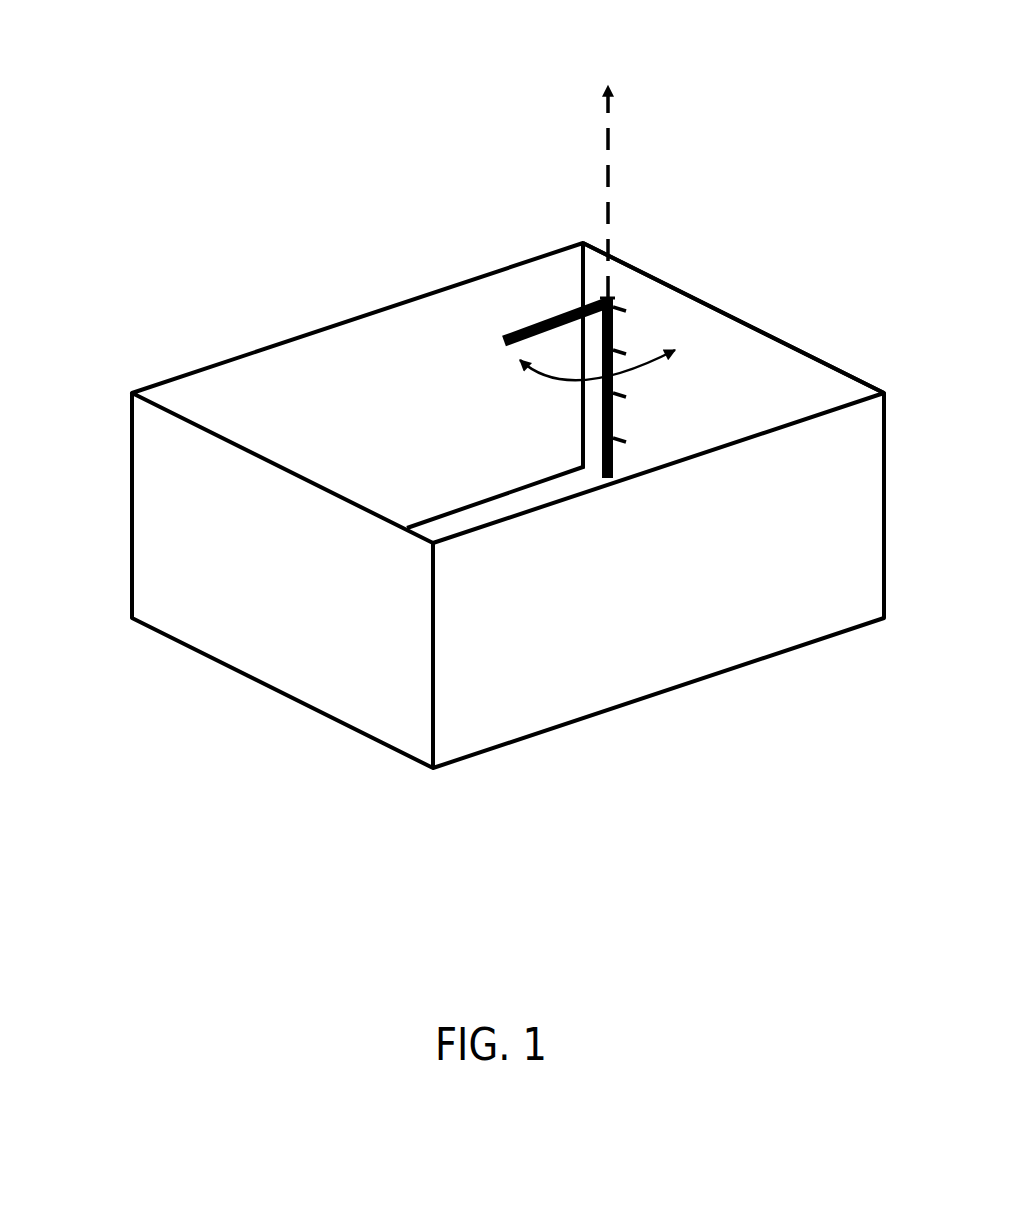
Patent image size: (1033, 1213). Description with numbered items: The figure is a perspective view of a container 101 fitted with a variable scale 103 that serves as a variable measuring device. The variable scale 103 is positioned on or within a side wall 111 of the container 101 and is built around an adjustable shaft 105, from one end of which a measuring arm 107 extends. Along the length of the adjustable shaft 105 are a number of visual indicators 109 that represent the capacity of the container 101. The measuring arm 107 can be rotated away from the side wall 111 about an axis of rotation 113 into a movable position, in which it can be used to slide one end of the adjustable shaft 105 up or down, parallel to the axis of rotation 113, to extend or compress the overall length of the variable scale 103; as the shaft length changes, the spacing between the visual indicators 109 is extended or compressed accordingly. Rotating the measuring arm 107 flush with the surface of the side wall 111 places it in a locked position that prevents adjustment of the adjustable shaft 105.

The container 101 is at (203, 362).
The variable scale 103 is at (528, 408).
The adjustable shaft 105 is at (620, 330).
The measuring arm 107 is at (550, 315).
The visual indicators 109 is at (626, 304).
The side wall 111 is at (822, 390).
The axis of rotation 113 is at (633, 58).